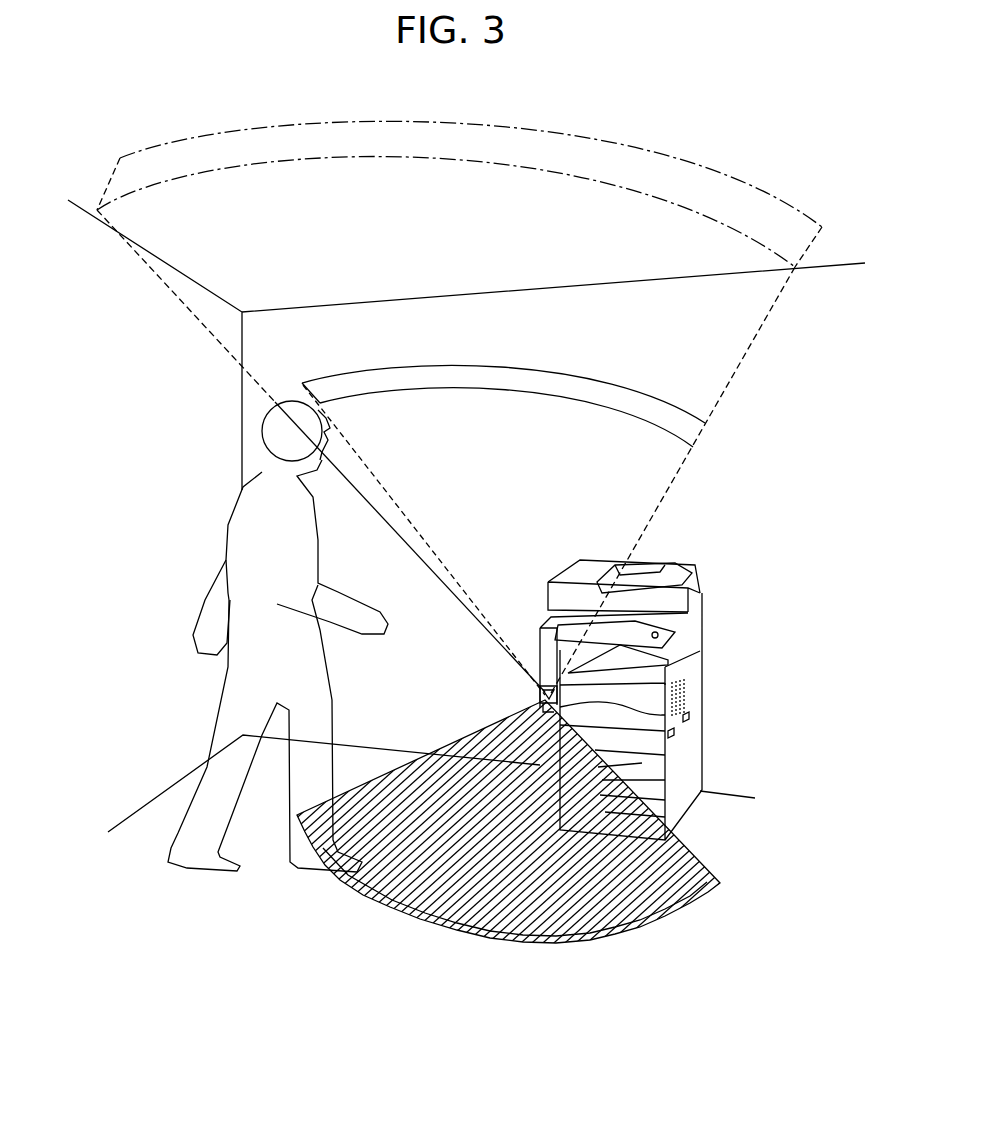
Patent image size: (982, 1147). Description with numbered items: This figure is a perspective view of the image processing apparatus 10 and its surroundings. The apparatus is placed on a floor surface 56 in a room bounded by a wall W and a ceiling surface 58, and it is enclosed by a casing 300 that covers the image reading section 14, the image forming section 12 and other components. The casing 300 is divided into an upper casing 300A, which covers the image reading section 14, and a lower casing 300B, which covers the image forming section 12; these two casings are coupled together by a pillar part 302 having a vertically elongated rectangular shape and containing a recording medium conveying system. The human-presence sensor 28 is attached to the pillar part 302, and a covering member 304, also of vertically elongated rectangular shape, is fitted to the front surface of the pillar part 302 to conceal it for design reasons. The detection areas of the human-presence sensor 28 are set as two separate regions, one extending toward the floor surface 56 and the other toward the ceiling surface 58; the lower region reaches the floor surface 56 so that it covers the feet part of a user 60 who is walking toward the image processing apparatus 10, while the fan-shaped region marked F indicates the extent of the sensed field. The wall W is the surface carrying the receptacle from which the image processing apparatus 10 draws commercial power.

The image processing apparatus 10 is at (634, 700).
The image forming section 12 is at (690, 688).
The image reading section 14 is at (690, 612).
The human-presence sensor 28 is at (543, 700).
The floor surface 56 is at (157, 820).
The ceiling surface 58 is at (545, 270).
The user 60 is at (278, 450).
The casing 300 is at (706, 716).
The upper casing 300A is at (670, 635).
The lower casing 300B is at (687, 761).
The pillar part 302 is at (525, 678).
The covering member 304 is at (547, 660).
The detection region F is at (688, 428).
The wall W is at (742, 778).